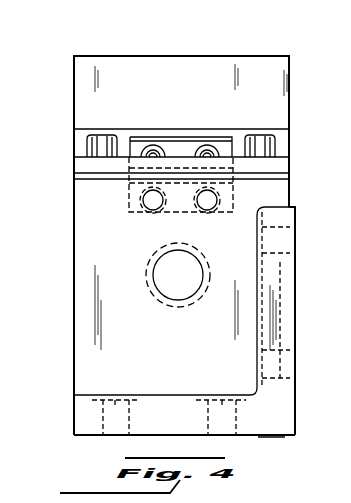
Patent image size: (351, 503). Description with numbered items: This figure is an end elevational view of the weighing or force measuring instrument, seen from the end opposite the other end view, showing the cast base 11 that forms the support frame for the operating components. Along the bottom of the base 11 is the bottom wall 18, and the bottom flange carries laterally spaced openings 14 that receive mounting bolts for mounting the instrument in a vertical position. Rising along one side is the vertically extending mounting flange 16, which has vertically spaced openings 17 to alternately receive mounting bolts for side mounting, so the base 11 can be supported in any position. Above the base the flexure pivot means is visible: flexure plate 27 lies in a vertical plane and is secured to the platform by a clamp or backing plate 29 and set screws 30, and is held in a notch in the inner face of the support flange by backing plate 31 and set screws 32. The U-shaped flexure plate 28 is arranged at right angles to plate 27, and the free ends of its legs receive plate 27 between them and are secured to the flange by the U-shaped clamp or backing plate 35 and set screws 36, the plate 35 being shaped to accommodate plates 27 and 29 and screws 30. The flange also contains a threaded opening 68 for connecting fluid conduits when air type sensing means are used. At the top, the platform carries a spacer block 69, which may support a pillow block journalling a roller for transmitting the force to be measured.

The base 11 is at (298, 404).
The laterally spaced openings 14 is at (118, 393).
The mounting flange 16 is at (298, 283).
The vertically spaced openings 17 is at (298, 243).
The bottom wall 18 is at (270, 437).
The flexure plate 27 is at (124, 187).
The flexure plate 28 is at (82, 180).
The clamp or backing plate 29 is at (183, 147).
The set screws 30 is at (148, 150).
The backing plate 31 is at (121, 217).
The set screws 32 is at (199, 199).
The clamp or backing plate 35 is at (82, 163).
The set screws 36 is at (110, 119).
The threaded opening 68 is at (167, 292).
The spacer block 69 is at (212, 63).